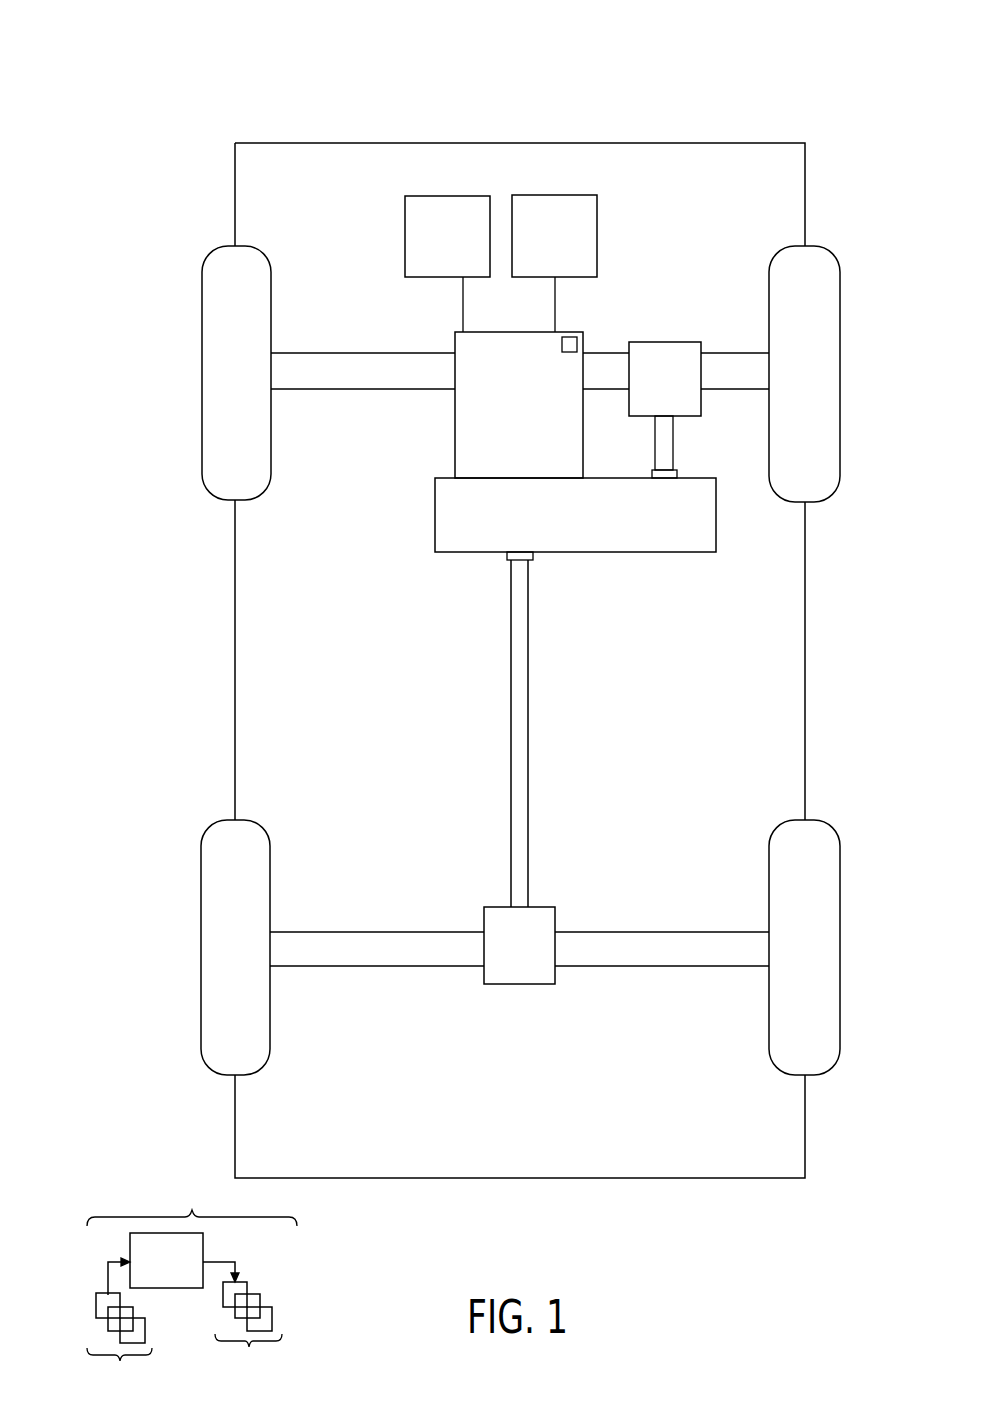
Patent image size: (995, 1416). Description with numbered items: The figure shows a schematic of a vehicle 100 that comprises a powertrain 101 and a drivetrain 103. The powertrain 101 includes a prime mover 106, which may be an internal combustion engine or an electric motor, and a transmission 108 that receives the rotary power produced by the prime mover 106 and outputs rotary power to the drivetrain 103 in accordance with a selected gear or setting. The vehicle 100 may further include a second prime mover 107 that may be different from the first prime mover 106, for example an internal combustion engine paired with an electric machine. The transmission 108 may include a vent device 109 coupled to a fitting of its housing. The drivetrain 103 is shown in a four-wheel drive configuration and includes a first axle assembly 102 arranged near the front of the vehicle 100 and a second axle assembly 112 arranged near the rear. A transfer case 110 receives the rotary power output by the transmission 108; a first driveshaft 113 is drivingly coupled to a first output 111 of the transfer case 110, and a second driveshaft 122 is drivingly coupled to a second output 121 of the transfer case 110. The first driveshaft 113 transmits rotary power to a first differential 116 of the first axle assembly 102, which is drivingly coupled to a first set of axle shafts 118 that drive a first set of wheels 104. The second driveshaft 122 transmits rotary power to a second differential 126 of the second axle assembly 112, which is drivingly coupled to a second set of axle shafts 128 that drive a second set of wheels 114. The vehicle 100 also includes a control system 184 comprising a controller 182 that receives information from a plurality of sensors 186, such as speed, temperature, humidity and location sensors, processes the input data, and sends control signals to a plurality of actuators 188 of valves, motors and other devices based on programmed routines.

The vehicle 100 is at (843, 36).
The powertrain 101 is at (628, 213).
The first axle assembly 102 is at (647, 308).
The drivetrain 103 is at (398, 430).
The first set of wheels 104 is at (210, 254).
The prime mover 106 is at (462, 250).
The second prime mover 107 is at (570, 250).
The transmission 108 is at (533, 417).
The vent device 109 is at (576, 337).
The transfer case 110 is at (590, 528).
The first output 111 is at (678, 474).
The second axle assembly 112 is at (583, 869).
The first driveshaft 113 is at (674, 455).
The second set of wheels 114 is at (212, 823).
The first differential 116 is at (680, 390).
The first set of axle shafts 118 is at (336, 352).
The second output 121 is at (535, 556).
The second driveshaft 122 is at (532, 758).
The second differential 126 is at (535, 956).
The second set of axle shafts 128 is at (692, 931).
The controller 182 is at (166, 1260).
The control system 184 is at (192, 1206).
The plurality of sensors 186 is at (119, 1323).
The plurality of actuators 188 is at (242, 1319).